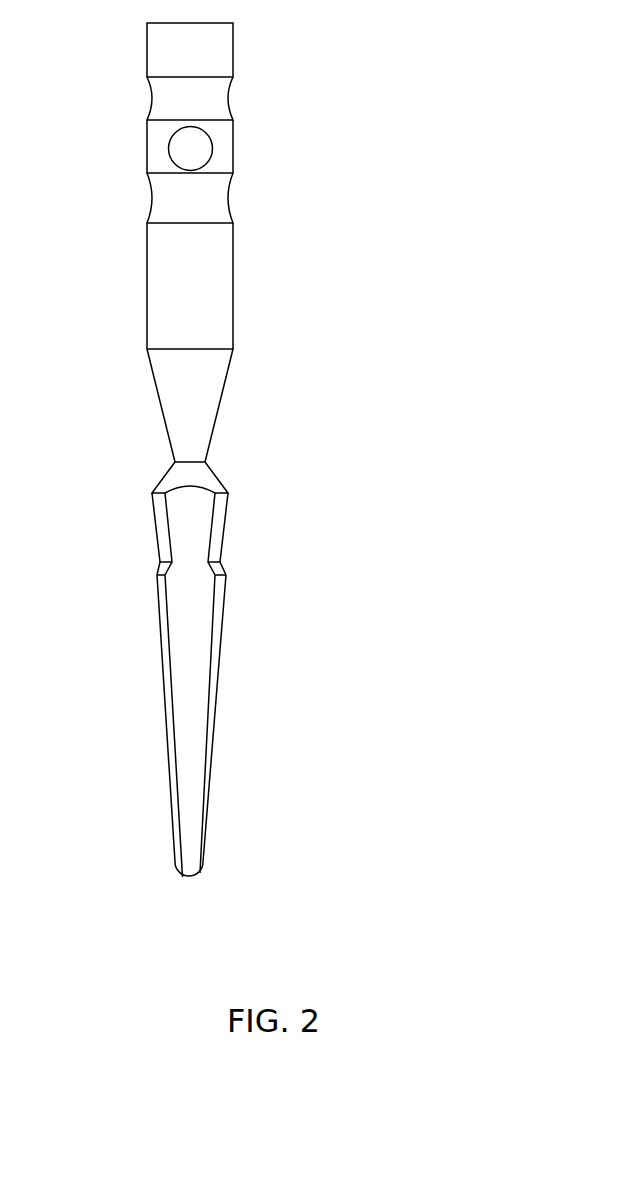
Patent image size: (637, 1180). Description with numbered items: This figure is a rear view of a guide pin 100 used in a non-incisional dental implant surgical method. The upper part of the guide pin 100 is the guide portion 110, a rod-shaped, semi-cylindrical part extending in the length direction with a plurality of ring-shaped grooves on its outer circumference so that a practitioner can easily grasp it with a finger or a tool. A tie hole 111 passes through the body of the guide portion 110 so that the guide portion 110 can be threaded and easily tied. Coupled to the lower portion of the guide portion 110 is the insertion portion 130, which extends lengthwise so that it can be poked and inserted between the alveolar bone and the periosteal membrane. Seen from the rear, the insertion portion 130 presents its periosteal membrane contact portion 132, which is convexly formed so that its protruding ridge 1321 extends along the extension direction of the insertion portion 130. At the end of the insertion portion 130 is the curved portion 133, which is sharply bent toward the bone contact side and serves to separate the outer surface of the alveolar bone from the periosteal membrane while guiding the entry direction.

The guide pin 100 is at (401, 155).
The guide portion 110 is at (252, 50).
The tie hole 111 is at (198, 150).
The insertion portion 130 is at (146, 643).
The periosteal membrane contact portion 132 is at (197, 632).
The ridge 1321 is at (172, 712).
The curved portion 133 is at (190, 869).